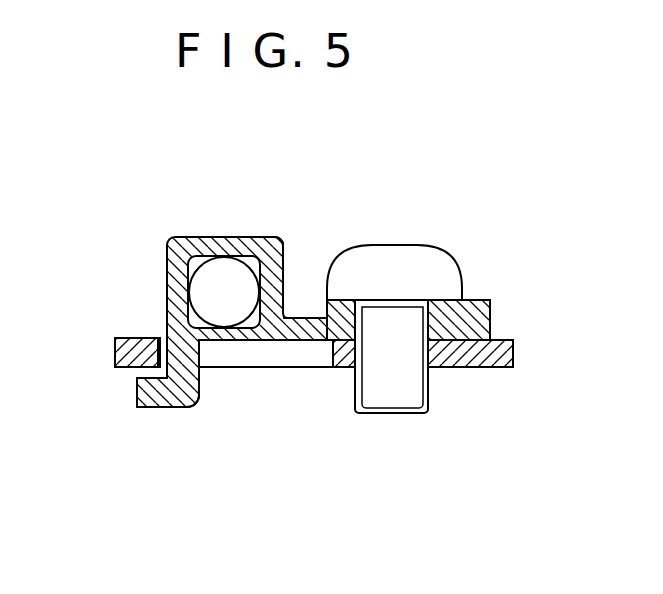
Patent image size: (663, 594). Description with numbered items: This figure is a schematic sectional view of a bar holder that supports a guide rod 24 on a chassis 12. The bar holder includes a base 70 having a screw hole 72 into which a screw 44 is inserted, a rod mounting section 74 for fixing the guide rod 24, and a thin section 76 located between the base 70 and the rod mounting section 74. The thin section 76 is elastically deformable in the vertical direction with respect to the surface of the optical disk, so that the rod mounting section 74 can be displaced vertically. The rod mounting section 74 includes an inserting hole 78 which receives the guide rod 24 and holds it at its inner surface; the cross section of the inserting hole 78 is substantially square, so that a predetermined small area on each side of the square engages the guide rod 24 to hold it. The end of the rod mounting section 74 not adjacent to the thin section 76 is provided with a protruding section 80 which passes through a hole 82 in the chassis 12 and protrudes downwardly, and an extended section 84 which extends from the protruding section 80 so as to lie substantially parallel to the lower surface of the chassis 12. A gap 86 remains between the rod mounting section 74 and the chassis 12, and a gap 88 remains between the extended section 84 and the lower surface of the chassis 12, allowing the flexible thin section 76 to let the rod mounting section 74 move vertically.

The chassis 12 is at (472, 357).
The guide rod 24 is at (225, 283).
The screw 44 is at (427, 273).
The base 70 is at (480, 304).
The screw hole 72 is at (422, 330).
The rod mounting section 74 is at (273, 248).
The thin section 76 is at (300, 345).
The inserting hole 78 is at (188, 250).
The protruding section 80 is at (190, 393).
The hole 82 is at (245, 357).
The extended section 84 is at (138, 395).
The gap 86 is at (160, 340).
The gap 88 is at (150, 373).